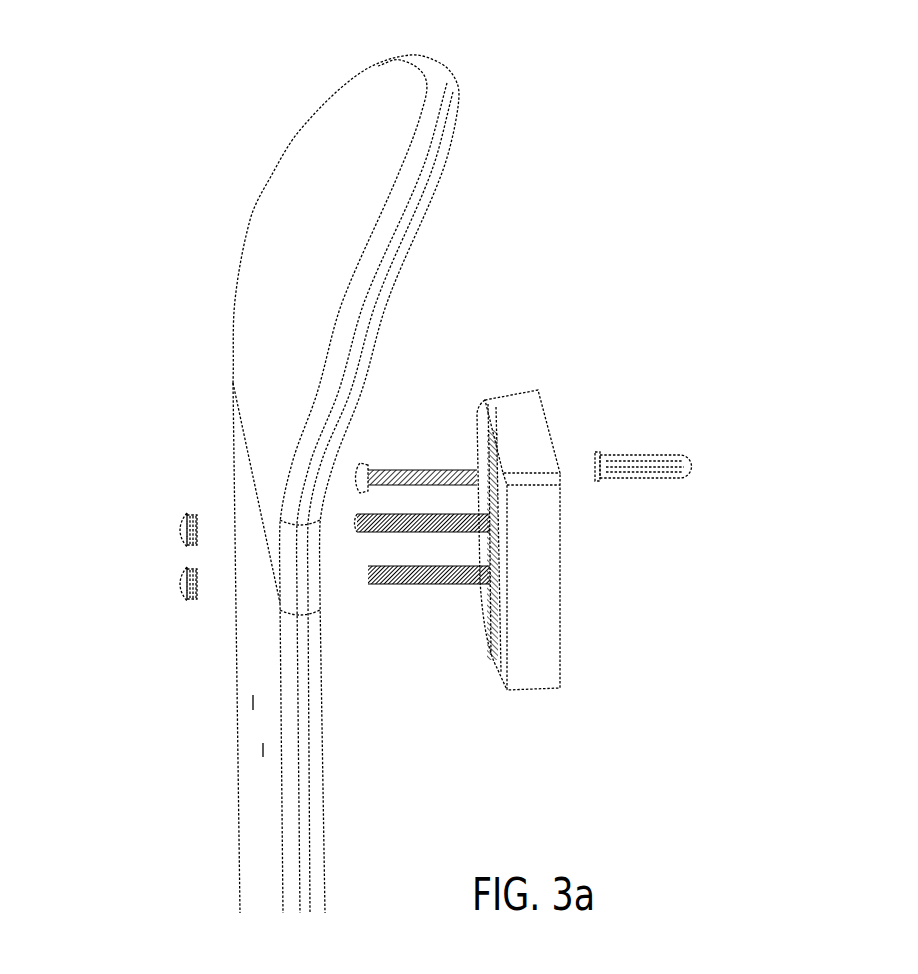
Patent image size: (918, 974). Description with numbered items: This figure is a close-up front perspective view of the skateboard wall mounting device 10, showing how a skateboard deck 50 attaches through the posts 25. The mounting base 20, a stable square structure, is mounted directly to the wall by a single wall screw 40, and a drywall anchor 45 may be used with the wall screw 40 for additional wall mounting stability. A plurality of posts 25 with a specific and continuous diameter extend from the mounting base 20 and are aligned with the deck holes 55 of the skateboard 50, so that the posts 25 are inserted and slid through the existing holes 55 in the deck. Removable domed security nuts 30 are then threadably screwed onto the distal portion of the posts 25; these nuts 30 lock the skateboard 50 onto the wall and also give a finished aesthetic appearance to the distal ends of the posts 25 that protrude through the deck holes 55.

The skateboard wall mounting device 10 is at (251, 482).
The mounting base 20 is at (537, 643).
The posts 25 is at (362, 538).
The domed security nuts 30 is at (172, 528).
The wall screw 40 is at (365, 460).
The drywall anchor 45 is at (620, 480).
The skateboard 50 is at (260, 358).
The deck holes 55 is at (250, 528).